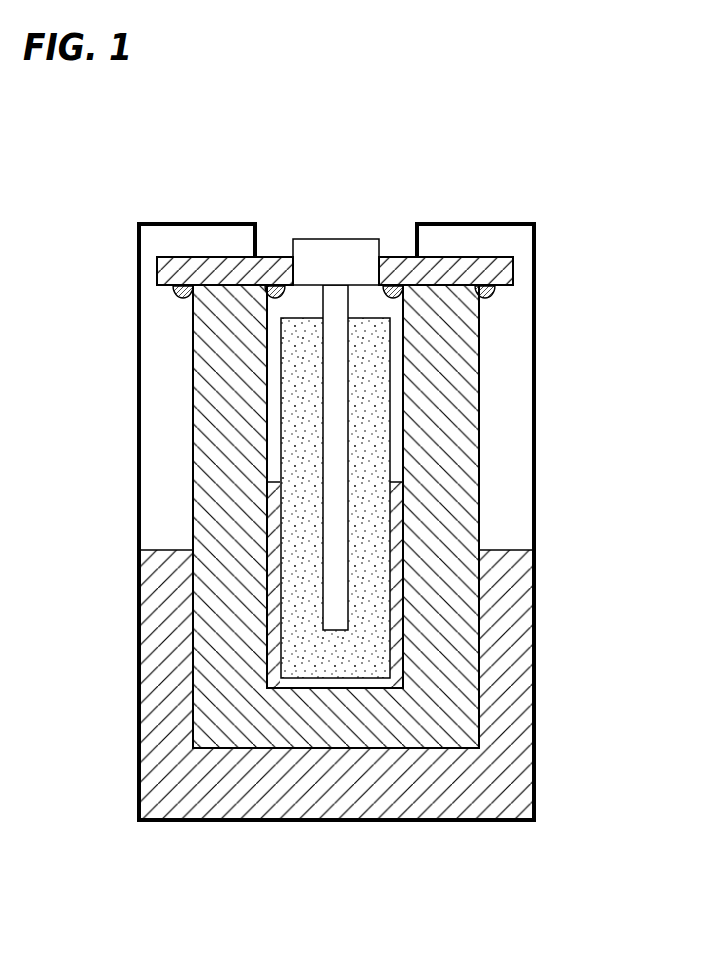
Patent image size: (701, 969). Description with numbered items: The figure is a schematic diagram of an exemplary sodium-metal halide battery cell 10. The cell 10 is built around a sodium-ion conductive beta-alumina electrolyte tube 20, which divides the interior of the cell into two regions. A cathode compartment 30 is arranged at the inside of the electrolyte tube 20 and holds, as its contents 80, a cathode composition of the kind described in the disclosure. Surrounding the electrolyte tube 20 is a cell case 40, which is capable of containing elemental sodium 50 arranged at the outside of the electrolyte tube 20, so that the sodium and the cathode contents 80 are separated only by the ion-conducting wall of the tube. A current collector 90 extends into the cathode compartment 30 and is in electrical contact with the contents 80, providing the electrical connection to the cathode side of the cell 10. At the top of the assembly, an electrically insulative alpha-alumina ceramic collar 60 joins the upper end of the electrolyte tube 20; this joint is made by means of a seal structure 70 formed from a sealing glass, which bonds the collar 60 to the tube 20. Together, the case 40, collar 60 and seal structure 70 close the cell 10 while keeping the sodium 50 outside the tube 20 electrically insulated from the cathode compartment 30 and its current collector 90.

The sodium-metal halide battery cell 10 is at (577, 150).
The sodium-ion conductive beta-alumina electrolyte tube 20 is at (447, 632).
The cathode compartment 30 is at (397, 514).
The cell case 40 is at (137, 453).
The elemental sodium 50 is at (157, 745).
The electrically insulative alpha-alumina ceramic collar 60 is at (207, 270).
The seal structure 70 is at (395, 293).
The contents of cathode compartment 80 is at (382, 440).
The current collector 90 is at (333, 240).